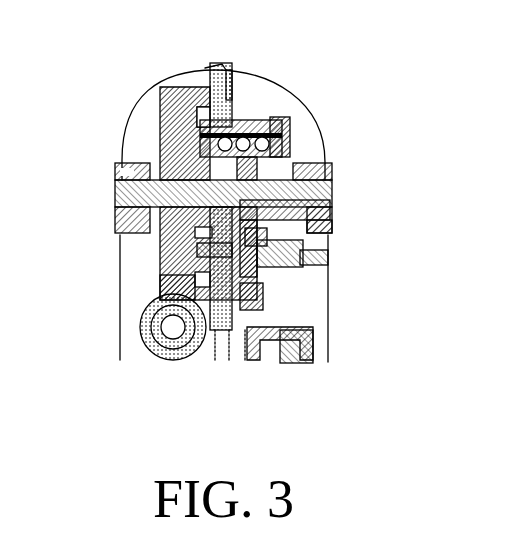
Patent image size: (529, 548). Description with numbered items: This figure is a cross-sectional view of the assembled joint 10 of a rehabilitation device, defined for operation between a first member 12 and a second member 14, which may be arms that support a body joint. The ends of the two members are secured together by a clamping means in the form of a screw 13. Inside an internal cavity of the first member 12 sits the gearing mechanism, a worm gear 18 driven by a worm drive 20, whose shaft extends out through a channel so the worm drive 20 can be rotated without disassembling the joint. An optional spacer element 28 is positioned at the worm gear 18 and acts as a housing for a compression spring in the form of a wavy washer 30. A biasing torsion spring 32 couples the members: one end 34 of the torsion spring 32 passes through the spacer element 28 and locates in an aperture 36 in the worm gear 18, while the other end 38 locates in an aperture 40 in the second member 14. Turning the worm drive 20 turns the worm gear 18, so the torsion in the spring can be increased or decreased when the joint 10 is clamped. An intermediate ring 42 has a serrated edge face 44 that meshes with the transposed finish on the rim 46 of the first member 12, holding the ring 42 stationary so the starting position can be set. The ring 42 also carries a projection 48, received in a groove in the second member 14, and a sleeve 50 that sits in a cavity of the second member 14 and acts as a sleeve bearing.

The joint 10 is at (409, 92).
The first member 12 is at (145, 129).
The screw 13 is at (292, 195).
The second member 14 is at (297, 105).
The worm gear 18 is at (173, 280).
The worm drive 20 is at (175, 327).
The spacer element 28 is at (200, 113).
The wavy washer 30 is at (210, 266).
The torsion spring 32 is at (253, 243).
The end of the torsion spring 34 is at (200, 248).
The aperture 36 is at (197, 250).
The other end of the torsion spring 38 is at (300, 257).
The aperture 40 is at (310, 262).
The ring 42 is at (229, 83).
The serrated edge face 44 is at (212, 82).
The rim 46 is at (207, 80).
The projection 48 is at (252, 300).
The sleeve 50 is at (270, 112).